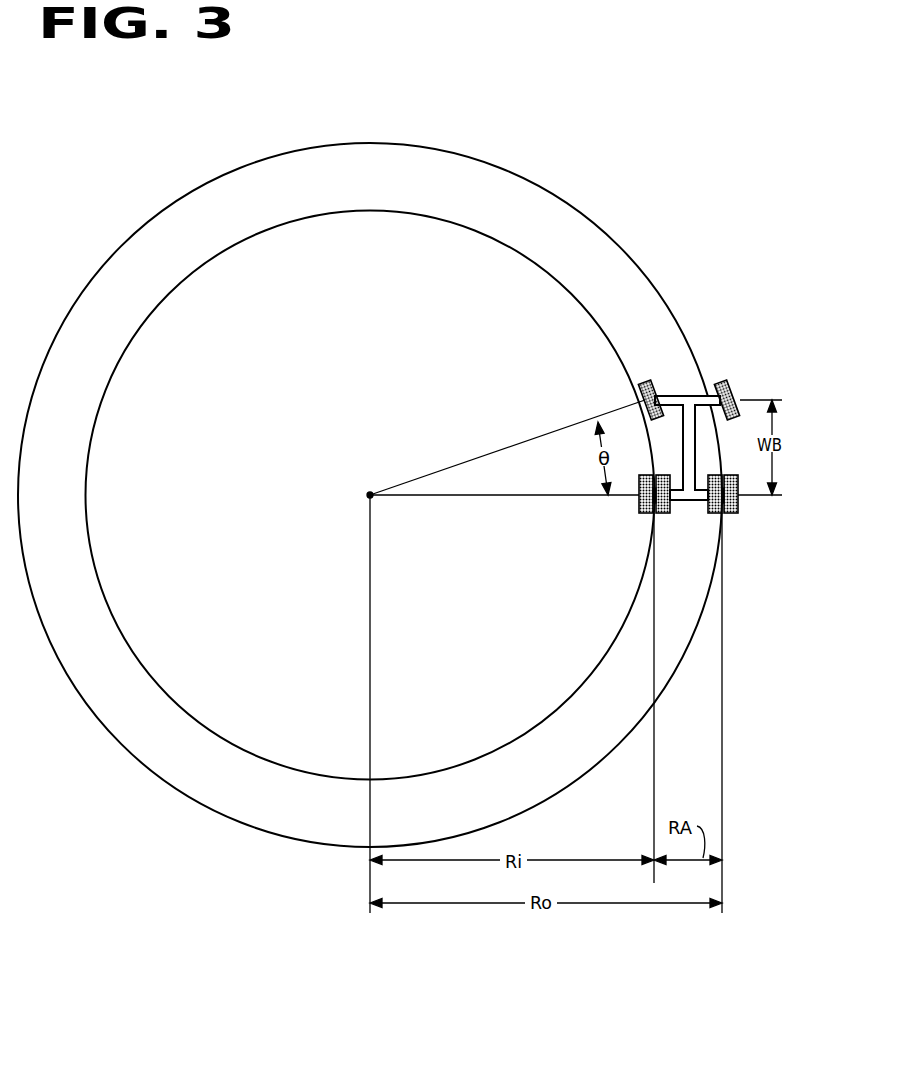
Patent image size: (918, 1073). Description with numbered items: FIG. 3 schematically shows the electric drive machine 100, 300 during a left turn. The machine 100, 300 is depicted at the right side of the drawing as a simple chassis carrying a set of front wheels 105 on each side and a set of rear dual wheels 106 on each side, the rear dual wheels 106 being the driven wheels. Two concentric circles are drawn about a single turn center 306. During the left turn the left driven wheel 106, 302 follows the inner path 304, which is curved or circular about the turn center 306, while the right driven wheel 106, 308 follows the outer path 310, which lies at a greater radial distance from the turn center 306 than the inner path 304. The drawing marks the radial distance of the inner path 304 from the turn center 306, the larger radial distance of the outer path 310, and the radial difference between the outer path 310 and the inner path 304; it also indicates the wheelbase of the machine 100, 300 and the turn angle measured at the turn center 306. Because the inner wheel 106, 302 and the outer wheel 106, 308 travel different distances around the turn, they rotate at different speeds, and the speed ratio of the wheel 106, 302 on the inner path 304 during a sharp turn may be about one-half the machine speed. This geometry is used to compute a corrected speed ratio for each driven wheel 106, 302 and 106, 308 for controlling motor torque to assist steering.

The machine 100 is at (674, 437).
The machine 300 is at (674, 458).
The front wheels 105 is at (735, 391).
The rear dual wheels 106 is at (674, 520).
The left driven wheel 302 is at (647, 513).
The right driven wheel 308 is at (728, 515).
The inner path 304 is at (548, 716).
The outer path 310 is at (696, 633).
The turn center 306 is at (370, 495).